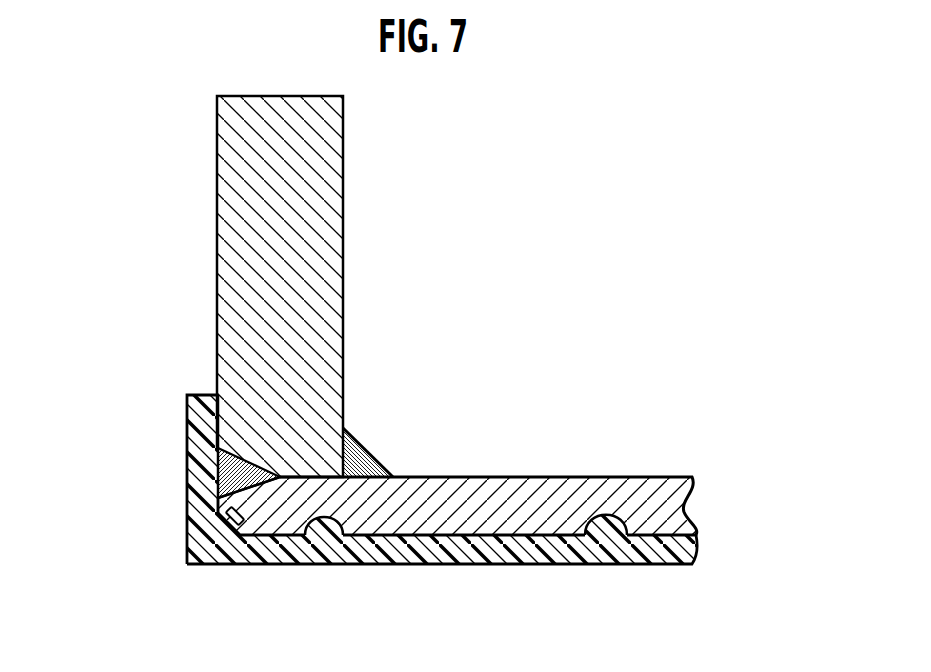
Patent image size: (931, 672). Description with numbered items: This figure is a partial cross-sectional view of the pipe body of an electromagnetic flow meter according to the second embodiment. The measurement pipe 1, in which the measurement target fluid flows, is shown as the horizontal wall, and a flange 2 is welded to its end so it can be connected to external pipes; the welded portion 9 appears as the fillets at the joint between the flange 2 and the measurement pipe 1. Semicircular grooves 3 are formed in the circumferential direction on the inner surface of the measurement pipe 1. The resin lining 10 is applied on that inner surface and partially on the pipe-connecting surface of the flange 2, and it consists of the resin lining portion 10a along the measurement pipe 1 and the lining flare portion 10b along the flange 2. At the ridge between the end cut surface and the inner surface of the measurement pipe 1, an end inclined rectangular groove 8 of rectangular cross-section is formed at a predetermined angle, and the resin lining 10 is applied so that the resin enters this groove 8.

The measurement pipe 1 is at (508, 477).
The flange 2 is at (343, 187).
The semicircular groove 3 is at (597, 513).
The end inclined rectangular groove 8 is at (243, 536).
The welded portion 9 is at (374, 457).
The resin lining 10 is at (386, 517).
The resin lining portion 10a is at (503, 566).
The lining flare portion 10b is at (187, 415).